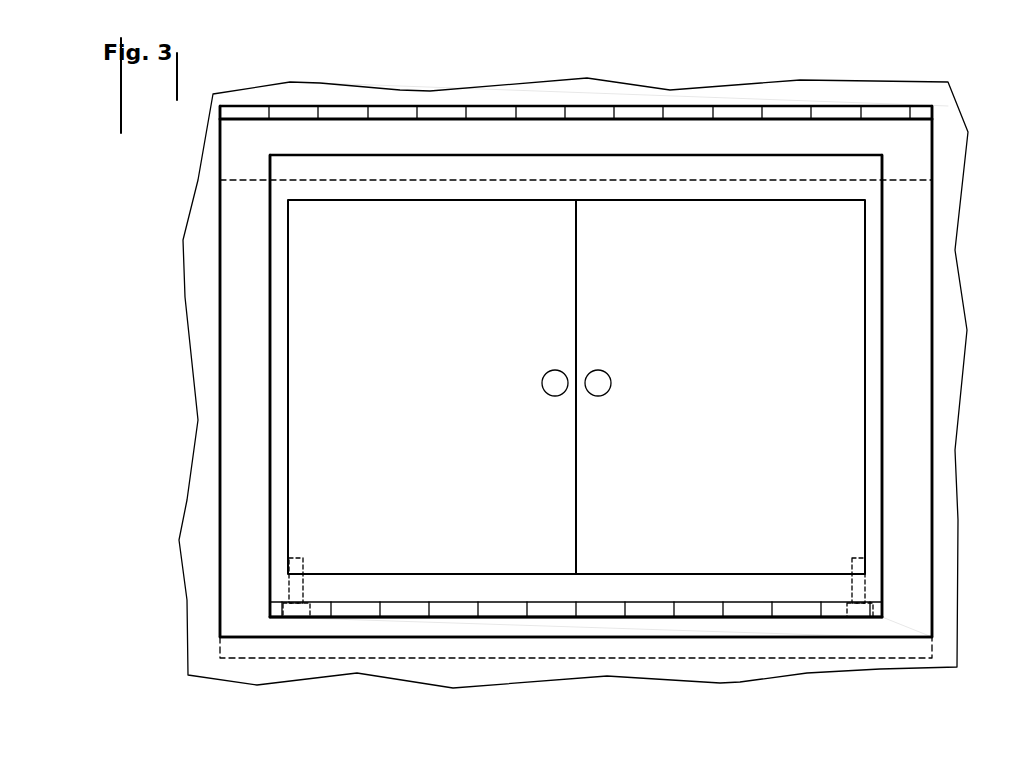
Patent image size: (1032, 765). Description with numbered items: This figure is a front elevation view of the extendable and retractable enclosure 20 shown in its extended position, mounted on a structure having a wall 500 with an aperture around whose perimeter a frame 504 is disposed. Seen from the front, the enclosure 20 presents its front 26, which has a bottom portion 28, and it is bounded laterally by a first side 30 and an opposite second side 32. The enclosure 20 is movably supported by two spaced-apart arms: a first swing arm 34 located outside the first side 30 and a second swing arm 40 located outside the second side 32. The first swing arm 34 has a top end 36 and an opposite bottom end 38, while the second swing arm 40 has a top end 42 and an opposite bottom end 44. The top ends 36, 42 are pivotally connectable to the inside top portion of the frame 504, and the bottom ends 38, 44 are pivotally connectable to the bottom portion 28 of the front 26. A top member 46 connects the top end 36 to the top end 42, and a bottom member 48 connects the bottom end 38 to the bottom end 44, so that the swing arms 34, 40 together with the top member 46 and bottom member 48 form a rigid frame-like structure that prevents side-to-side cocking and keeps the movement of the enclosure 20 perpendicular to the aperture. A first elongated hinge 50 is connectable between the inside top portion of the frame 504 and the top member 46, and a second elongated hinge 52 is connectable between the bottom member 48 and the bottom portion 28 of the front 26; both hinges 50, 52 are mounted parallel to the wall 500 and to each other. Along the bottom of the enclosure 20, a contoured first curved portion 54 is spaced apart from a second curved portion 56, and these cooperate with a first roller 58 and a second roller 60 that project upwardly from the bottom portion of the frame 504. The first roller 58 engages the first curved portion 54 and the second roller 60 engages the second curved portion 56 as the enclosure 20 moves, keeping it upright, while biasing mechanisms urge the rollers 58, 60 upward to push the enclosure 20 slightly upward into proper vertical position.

The extendable and retractable enclosure 20 is at (966, 106).
The front 26 is at (875, 273).
The bottom portion of front 28 is at (277, 587).
The first side 30 is at (270, 339).
The second side 32 is at (882, 373).
The first swing arm 34 is at (247, 390).
The top end of first swing arm 36 is at (248, 142).
The bottom end of first swing arm 38 is at (242, 613).
The second swing arm 40 is at (912, 467).
The top end of second swing arm 42 is at (903, 131).
The bottom end of second swing arm 44 is at (912, 612).
The top member 46 is at (440, 135).
The bottom member 48 is at (604, 625).
The first elongated hinge 50 is at (677, 112).
The second elongated hinge 52 is at (415, 612).
The first curved portion 54 is at (292, 557).
The second curved portion 56 is at (858, 557).
The first roller 58 is at (303, 573).
The second roller 60 is at (857, 571).
The wall 500 is at (367, 98).
The frame 504 is at (839, 135).